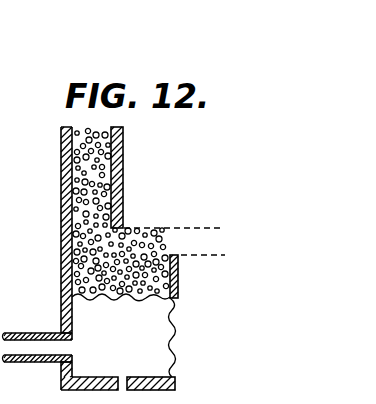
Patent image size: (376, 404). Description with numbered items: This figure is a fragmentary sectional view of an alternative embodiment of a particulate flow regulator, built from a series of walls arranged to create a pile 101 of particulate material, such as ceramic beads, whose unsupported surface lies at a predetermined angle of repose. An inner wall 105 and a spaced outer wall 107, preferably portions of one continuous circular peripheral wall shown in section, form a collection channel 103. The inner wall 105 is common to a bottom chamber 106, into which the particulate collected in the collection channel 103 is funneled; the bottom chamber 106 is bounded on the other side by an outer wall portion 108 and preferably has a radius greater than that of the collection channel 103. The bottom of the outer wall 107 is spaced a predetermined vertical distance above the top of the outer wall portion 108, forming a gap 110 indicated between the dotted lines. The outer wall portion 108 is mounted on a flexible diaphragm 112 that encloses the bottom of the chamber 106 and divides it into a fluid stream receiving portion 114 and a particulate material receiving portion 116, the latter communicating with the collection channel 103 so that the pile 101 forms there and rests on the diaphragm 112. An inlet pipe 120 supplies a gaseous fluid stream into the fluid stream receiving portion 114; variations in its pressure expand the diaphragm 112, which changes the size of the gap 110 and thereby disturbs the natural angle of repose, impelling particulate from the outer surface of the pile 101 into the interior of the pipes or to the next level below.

The pile 101 is at (128, 232).
The collection channel 103 is at (90, 134).
The inner wall 105 is at (61, 198).
The bottom chamber 106 is at (150, 283).
The outer wall 107 is at (123, 148).
The outer wall portion 108 is at (180, 257).
The gap 110 is at (222, 242).
The flexible diaphragm 112 is at (140, 302).
The fluid stream receiving portion 114 is at (103, 351).
The particulate material receiving portion 116 is at (98, 263).
The inlet pipe 120 is at (38, 362).